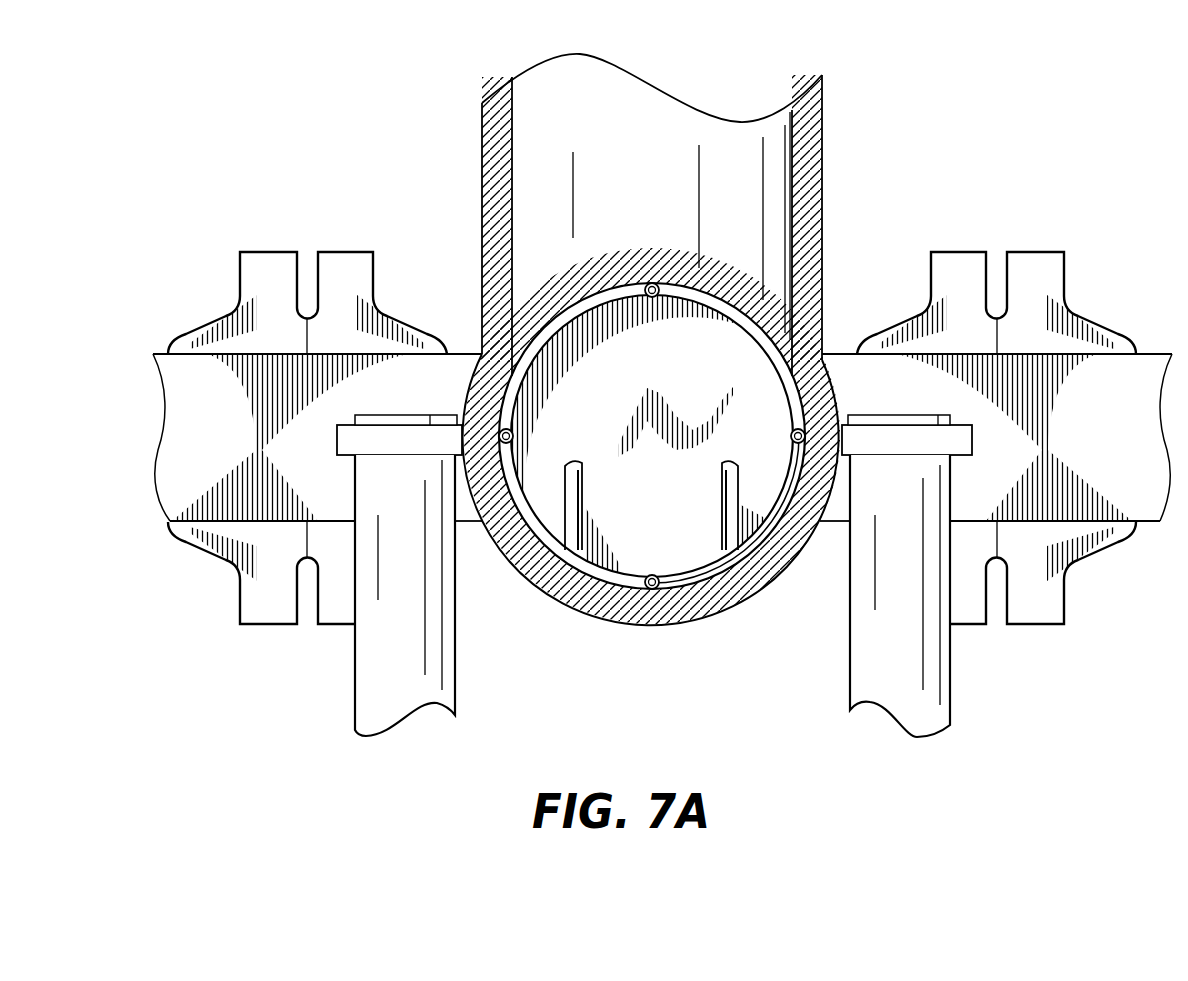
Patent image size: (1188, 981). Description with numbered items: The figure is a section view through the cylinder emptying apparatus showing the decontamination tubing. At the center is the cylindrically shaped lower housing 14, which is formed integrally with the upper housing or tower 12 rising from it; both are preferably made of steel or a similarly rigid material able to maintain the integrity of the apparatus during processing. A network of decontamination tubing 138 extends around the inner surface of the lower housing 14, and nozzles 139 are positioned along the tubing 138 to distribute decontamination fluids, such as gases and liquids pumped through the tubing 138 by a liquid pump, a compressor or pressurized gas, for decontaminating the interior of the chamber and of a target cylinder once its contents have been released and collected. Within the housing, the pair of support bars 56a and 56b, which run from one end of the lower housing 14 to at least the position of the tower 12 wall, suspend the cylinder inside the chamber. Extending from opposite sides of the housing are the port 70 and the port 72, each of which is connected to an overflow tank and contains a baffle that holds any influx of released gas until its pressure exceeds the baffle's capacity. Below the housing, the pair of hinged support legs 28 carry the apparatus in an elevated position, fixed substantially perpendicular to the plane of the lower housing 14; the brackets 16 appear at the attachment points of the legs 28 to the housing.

The tower 12 is at (826, 115).
The lower housing 14 is at (542, 580).
The mounting bracket 16 is at (345, 437).
The support legs 28 is at (375, 676).
The support bar 56a is at (578, 461).
The support bar 56b is at (728, 460).
The port 70 is at (212, 431).
The port 72 is at (1128, 431).
The decontamination tubing 138 is at (690, 294).
The nozzles 139 is at (657, 297).